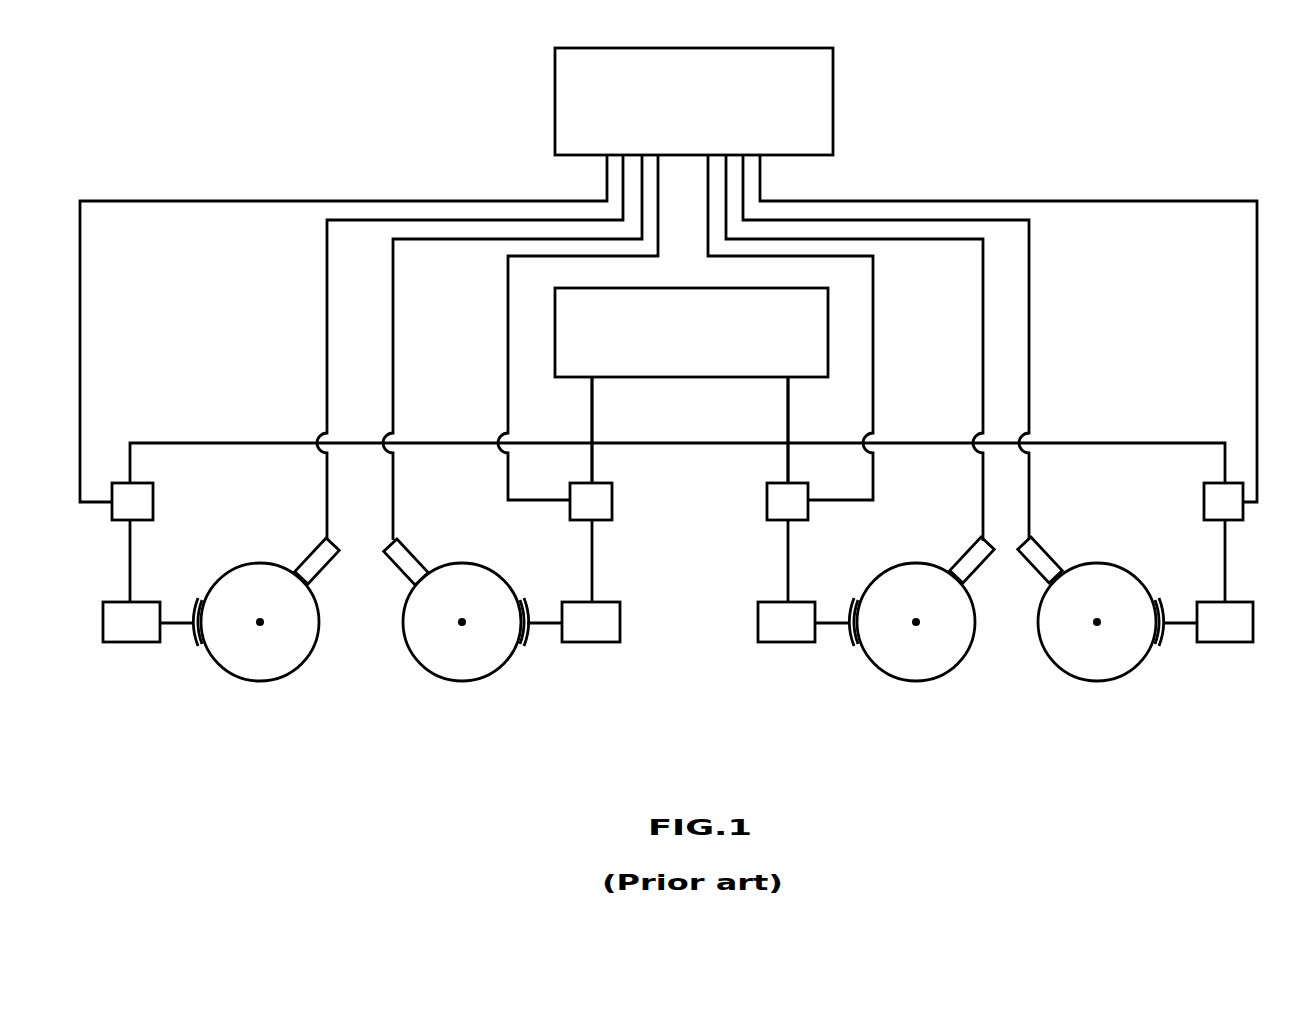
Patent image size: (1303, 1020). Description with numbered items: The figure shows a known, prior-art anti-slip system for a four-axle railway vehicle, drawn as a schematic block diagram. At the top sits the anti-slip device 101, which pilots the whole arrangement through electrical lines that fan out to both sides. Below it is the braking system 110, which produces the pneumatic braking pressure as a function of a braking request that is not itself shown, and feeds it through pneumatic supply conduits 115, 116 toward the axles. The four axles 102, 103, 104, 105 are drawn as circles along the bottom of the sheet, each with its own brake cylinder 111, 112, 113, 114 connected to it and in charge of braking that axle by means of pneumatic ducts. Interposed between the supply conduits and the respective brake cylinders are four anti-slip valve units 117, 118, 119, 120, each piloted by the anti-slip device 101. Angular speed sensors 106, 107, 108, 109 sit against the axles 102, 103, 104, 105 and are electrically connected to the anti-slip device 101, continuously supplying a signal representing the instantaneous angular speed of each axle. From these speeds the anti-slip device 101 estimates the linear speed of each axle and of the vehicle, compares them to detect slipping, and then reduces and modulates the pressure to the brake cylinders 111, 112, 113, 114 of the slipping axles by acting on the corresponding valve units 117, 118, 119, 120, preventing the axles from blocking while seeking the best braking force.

The controller 101 is at (817, 96).
The power supply unit 110 is at (725, 315).
The first wheel 102 is at (262, 624).
The second wheel 103 is at (463, 624).
The third wheel 104 is at (918, 624).
The fourth wheel 105 is at (1098, 625).
The first wheel speed sensor 106 is at (311, 559).
The second wheel speed sensor 107 is at (404, 566).
The third wheel speed sensor 108 is at (966, 563).
The fourth wheel speed sensor 109 is at (1043, 565).
The first brake actuator 111 is at (129, 628).
The second brake actuator 112 is at (583, 628).
The third brake actuator 113 is at (789, 622).
The fourth brake actuator 114 is at (1220, 625).
The first power line 115 is at (593, 430).
The second power line 116 is at (787, 432).
The first control unit 117 is at (138, 500).
The second control unit 118 is at (598, 501).
The third control unit 119 is at (776, 503).
The fourth control unit 120 is at (1222, 500).